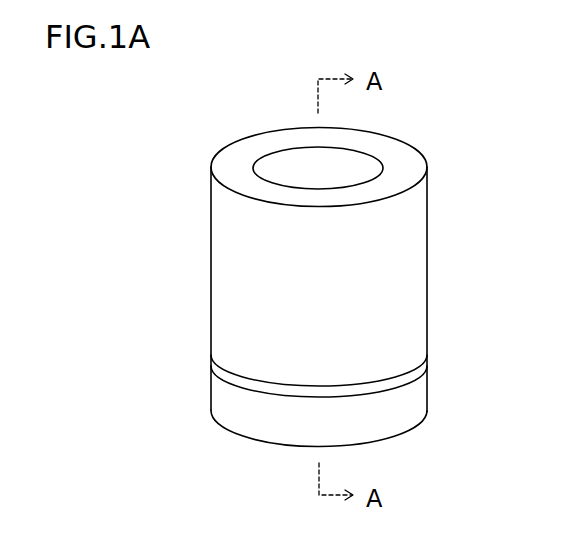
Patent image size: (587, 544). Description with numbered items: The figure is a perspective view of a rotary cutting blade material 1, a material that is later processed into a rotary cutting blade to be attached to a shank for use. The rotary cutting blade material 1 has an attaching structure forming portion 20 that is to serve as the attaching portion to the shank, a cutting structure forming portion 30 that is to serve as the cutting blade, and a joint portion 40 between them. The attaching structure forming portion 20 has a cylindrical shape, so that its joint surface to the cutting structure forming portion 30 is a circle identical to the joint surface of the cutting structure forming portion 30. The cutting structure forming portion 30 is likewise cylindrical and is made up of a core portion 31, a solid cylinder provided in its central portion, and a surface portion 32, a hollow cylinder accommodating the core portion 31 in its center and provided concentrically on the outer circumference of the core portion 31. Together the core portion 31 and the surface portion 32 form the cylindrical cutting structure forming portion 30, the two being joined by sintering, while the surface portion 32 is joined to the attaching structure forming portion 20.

The rotary cutting blade material 1 is at (432, 99).
The attaching structure forming portion 20 is at (415, 403).
The cutting structure forming portion 30 is at (508, 137).
The core portion 31 is at (353, 167).
The surface portion 32 is at (395, 180).
The joint portion 40 is at (425, 368).